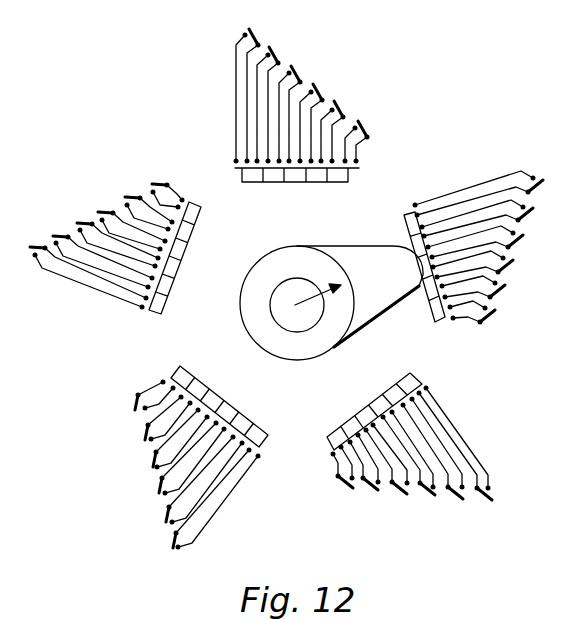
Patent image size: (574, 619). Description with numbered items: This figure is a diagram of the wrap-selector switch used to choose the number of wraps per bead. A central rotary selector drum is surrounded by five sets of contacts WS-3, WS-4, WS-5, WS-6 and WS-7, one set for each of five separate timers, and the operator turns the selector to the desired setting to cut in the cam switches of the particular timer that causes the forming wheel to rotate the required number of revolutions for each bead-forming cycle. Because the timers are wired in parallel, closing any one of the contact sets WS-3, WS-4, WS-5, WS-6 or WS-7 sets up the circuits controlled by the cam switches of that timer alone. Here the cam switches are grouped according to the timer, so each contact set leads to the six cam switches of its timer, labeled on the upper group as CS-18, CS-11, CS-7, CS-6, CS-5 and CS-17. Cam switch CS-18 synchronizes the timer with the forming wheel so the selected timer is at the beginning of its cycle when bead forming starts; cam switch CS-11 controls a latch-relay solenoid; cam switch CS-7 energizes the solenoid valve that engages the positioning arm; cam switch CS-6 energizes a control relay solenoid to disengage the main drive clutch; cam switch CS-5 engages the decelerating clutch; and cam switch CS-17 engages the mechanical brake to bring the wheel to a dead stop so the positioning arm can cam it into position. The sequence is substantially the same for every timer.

The wrap-selector switch contacts WS-3 is at (338, 187).
The wrap-selector switch contacts WS-4 is at (400, 232).
The wrap-selector switch contacts WS-5 is at (398, 375).
The wrap-selector switch contacts WS-6 is at (262, 374).
The wrap-selector switch contacts WS-7 is at (187, 287).
The cam switch CS-18 is at (253, 32).
The cam switch CS-11 is at (273, 53).
The cam switch CS-7 is at (295, 72).
The cam switch CS-6 is at (317, 90).
The cam switch CS-5 is at (338, 107).
The cam switch CS-17 is at (362, 127).